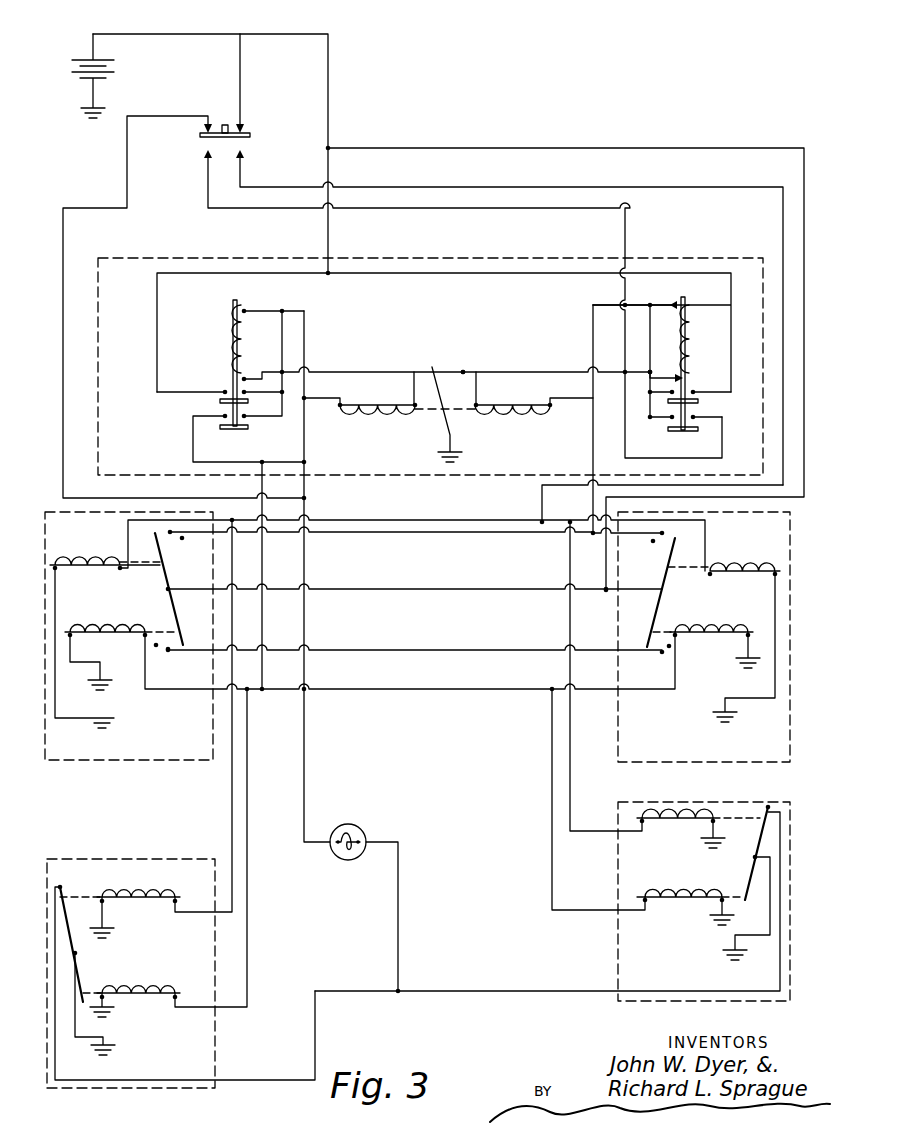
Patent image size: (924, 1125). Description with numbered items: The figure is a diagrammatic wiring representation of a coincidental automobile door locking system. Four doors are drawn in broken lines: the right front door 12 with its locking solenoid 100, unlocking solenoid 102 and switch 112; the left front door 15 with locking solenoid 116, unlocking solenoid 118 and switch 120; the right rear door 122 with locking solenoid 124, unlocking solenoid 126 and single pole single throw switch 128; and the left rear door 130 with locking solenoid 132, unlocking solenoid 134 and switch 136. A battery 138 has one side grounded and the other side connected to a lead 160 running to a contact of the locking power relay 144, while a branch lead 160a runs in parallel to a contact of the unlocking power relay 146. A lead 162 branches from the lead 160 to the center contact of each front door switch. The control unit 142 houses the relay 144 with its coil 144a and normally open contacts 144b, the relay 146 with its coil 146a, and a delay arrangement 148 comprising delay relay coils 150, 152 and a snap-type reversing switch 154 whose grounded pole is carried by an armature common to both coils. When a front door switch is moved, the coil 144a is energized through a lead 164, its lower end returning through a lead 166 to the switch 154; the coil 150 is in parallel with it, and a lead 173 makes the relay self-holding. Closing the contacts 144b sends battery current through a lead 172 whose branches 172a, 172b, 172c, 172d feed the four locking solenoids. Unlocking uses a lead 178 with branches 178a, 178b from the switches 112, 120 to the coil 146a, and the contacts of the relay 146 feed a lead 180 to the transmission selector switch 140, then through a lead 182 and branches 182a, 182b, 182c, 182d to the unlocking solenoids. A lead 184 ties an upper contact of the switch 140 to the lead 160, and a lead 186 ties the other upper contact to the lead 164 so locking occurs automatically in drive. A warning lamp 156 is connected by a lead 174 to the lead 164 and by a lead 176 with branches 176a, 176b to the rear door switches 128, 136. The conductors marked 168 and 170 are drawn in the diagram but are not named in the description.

The battery 138 is at (78, 82).
The lead 160 is at (161, 34).
The branch lead 160a is at (513, 276).
The lead 184 is at (241, 100).
The switch 140 is at (246, 138).
The lead 186 is at (62, 300).
The lead 180 is at (508, 224).
The lead 182 is at (416, 188).
The branch lead 182a is at (706, 555).
The branch lead 182b is at (487, 479).
The branch lead 182c is at (570, 761).
The branch lead 182d is at (230, 836).
The lead 162 is at (606, 126).
The control unit 142 is at (197, 258).
The locking power relay 144 is at (226, 365).
The locking power relay coil 144a is at (262, 306).
The relay contacts 144b is at (225, 393).
The unlocking power relay 146 is at (700, 379).
The unlocking power relay coil 146a is at (683, 332).
The lead 173 is at (304, 312).
The lead 164 is at (304, 342).
The lead 166 is at (344, 372).
The delay arrangement 148 is at (350, 422).
The delay relay coil 150 is at (396, 412).
The delay relay coil 152 is at (516, 418).
The snap-type reversing switch 154 is at (442, 376).
The switch blade 170 is at (422, 370).
The conductor 168 is at (531, 372).
The lead 178 is at (592, 442).
The branch lead 178a is at (628, 534).
The branch lead 178b is at (430, 533).
The lead 172 is at (254, 550).
The branch lead 172a is at (377, 716).
The branch lead 172b is at (204, 692).
The branch lead 172c is at (552, 856).
The branch lead 172d is at (248, 978).
The lead 174 is at (306, 756).
The lead 176 is at (400, 886).
The branch lead 176a is at (454, 990).
The branch lead 176b is at (222, 1078).
The lamp 156 is at (354, 828).
The left front door 15 is at (46, 772).
The right front door 12 is at (618, 728).
The right rear door 122 is at (618, 982).
The left rear door 130 is at (112, 856).
The unlocking solenoid 118 is at (104, 558).
The locking solenoid 116 is at (117, 624).
The switch 120 is at (168, 612).
The unlocking solenoid 102 is at (728, 570).
The locking solenoid 100 is at (712, 628).
The switch 112 is at (660, 620).
The unlocking solenoid 126 is at (652, 814).
The locking solenoid 124 is at (676, 890).
The single pole single throw switch 128 is at (749, 878).
The unlocking solenoid 134 is at (120, 898).
The locking solenoid 132 is at (122, 999).
The single pole single throw switch 136 is at (76, 944).